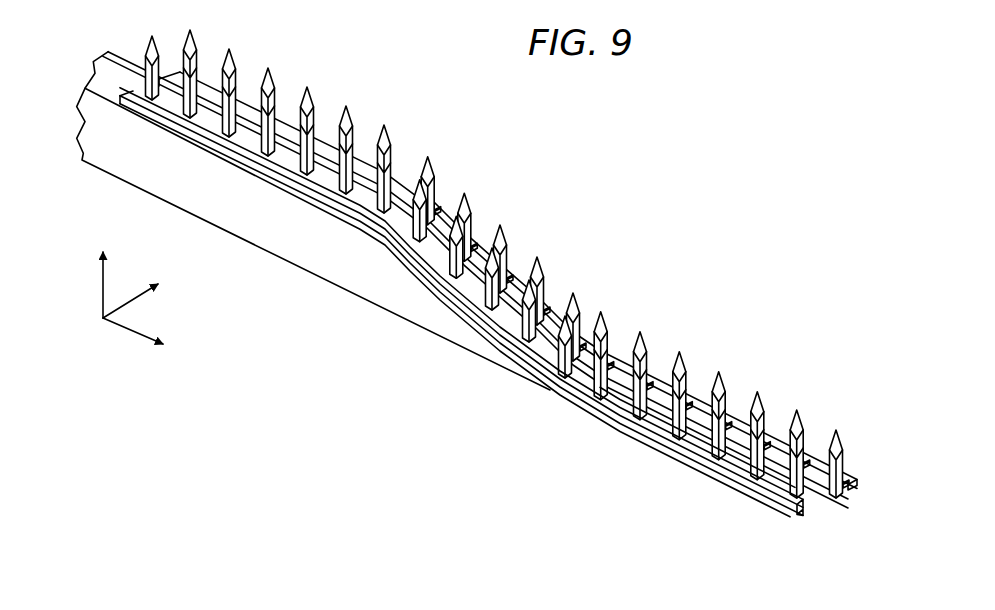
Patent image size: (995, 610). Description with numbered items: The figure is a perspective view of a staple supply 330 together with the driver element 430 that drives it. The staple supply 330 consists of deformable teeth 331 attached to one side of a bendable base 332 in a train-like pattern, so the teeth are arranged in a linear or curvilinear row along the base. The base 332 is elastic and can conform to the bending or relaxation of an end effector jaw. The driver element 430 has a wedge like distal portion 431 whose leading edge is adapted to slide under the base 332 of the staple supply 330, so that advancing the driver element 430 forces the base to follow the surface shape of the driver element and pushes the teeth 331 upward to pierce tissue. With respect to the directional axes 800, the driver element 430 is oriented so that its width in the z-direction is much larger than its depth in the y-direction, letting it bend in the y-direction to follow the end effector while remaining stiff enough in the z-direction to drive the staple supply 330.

The directional axes 800 is at (98, 341).
The driver element 430 is at (368, 262).
The wedge like distal portion 431 is at (430, 324).
The staple supply 330 is at (488, 302).
The bendable base 332 is at (723, 469).
The teeth 331 is at (771, 501).